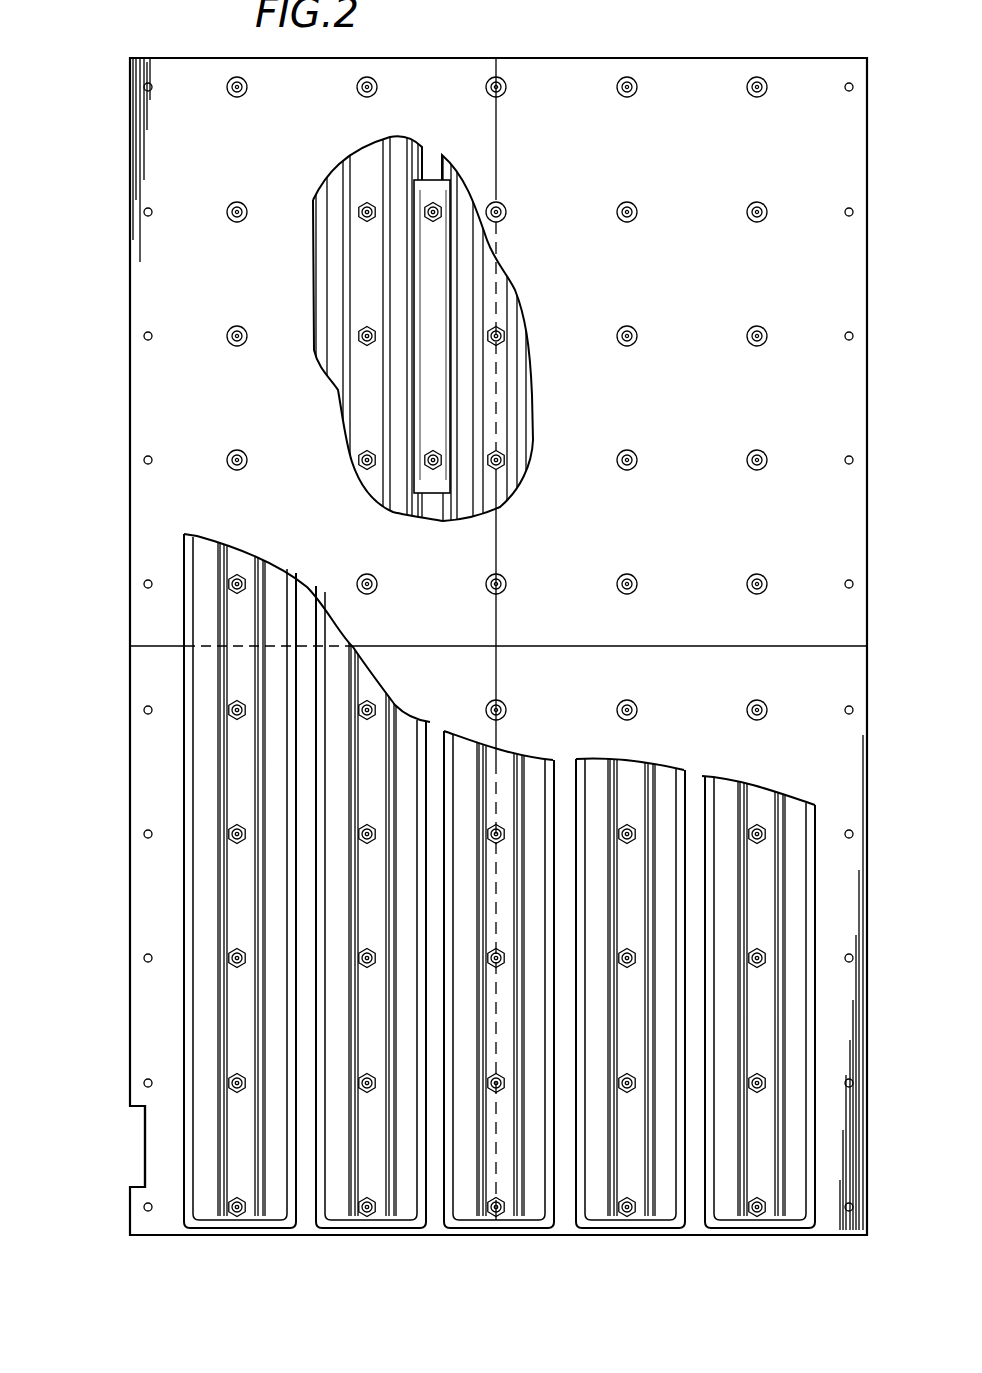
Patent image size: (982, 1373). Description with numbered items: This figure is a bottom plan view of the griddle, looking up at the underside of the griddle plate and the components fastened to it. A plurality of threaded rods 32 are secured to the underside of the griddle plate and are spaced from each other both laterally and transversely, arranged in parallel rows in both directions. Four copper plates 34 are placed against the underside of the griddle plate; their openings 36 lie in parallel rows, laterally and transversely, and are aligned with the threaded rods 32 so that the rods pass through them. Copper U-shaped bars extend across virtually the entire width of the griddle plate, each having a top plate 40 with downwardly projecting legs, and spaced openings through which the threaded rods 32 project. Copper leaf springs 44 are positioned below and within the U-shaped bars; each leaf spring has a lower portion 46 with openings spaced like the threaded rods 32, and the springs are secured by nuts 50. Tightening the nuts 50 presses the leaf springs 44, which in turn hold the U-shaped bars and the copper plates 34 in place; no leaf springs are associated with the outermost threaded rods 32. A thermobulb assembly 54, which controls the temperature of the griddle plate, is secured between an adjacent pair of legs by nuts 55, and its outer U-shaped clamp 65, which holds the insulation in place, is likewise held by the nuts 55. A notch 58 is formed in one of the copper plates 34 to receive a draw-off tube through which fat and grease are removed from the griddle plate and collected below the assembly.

The threaded rod 32 is at (236, 452).
The copper plate 34 is at (446, 636).
The opening 36 is at (244, 295).
The top plate 40 is at (267, 1223).
The leaf spring 44 is at (634, 1145).
The lower portion 46 is at (232, 754).
The nut 50 is at (231, 832).
The thermobulb assembly 54 is at (456, 316).
The nut 55 is at (442, 210).
The notch 58 is at (143, 1130).
The outer U-shaped clamp 65 is at (440, 270).